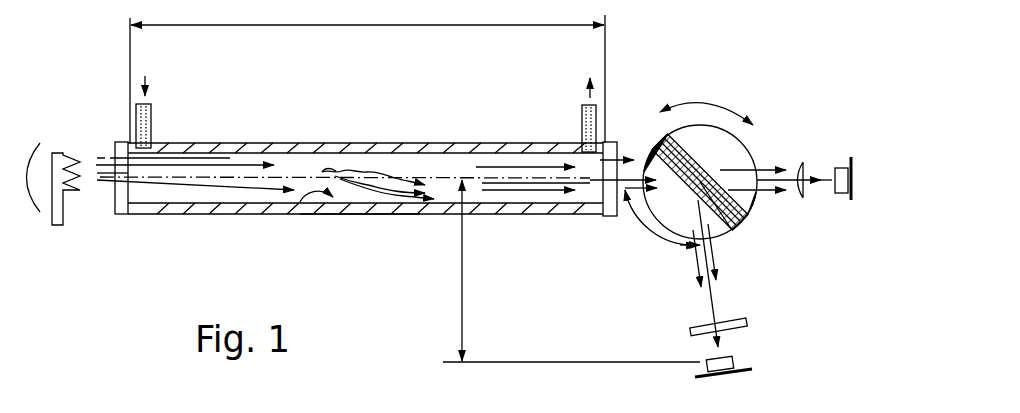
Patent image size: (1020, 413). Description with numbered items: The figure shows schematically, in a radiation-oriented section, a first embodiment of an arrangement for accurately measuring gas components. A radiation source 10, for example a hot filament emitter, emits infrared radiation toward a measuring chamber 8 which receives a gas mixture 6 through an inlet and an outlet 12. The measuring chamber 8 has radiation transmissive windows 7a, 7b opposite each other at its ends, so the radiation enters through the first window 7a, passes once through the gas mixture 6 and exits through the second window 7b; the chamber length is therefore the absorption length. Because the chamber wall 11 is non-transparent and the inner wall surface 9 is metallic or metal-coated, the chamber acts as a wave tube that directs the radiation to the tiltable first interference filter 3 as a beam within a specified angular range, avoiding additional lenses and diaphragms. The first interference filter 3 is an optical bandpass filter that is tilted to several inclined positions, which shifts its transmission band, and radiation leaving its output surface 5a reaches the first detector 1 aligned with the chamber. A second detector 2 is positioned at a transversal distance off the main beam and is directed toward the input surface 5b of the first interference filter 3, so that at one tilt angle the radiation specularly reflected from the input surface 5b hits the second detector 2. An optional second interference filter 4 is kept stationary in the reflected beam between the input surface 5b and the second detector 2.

The first detector 1 is at (841, 195).
The second detector 2 is at (752, 366).
The first interference filter 3 is at (715, 172).
The second interference filter 4 is at (690, 326).
The output surface 5a is at (703, 163).
The input surface 5b is at (685, 193).
The gas mixture 6 is at (393, 171).
The first radiation transmissive window 7a is at (120, 197).
The second radiation transmissive window 7b is at (612, 148).
The measuring chamber 8 is at (356, 131).
The inner wall surface 9 is at (303, 208).
The radiation source 10 is at (62, 152).
The chamber wall 11 is at (375, 207).
The inlet and outlet 12 is at (152, 118).